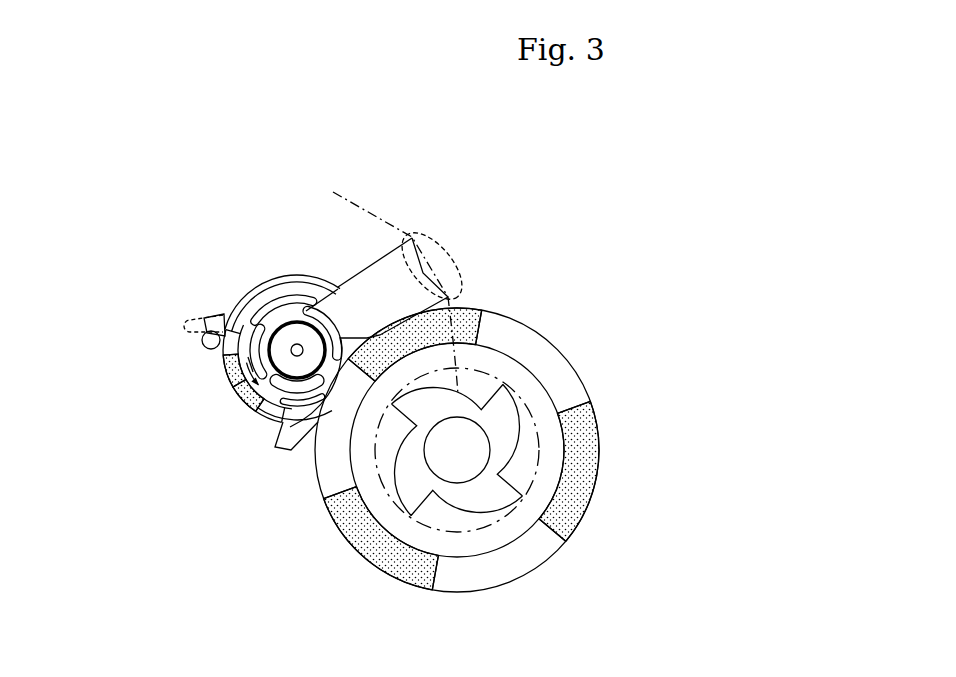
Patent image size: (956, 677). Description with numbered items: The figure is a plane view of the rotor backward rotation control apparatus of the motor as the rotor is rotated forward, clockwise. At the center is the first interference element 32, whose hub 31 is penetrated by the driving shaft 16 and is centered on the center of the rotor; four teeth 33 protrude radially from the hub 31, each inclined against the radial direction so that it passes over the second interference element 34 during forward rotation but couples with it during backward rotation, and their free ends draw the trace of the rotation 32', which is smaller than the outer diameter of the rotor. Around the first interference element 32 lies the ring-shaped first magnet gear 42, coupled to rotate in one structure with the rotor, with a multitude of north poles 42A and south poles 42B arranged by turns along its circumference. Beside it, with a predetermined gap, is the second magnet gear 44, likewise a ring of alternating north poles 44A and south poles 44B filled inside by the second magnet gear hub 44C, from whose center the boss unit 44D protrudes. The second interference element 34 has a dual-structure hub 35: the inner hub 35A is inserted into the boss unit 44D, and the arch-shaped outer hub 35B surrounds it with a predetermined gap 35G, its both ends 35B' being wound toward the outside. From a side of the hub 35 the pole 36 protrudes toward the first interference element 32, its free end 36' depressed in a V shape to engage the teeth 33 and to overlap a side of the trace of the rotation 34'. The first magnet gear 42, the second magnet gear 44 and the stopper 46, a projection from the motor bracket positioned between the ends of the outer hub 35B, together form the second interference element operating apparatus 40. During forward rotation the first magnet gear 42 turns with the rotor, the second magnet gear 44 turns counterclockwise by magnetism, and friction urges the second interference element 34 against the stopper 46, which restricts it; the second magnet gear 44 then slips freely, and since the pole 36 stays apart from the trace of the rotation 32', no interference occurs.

The driving shaft 16 is at (473, 458).
The hub 31 is at (505, 398).
The first interference element 32 is at (489, 438).
The trace of the rotation of the first interference element 32' is at (536, 450).
The tooth 33 is at (507, 415).
The second interference element 34 is at (343, 303).
The trace of the rotation of the second interference element 34' is at (437, 293).
The hub 35 is at (286, 270).
The inner hub 35A is at (262, 312).
The outer hub 35B is at (172, 299).
The both ends of the outer hub 35B' is at (161, 329).
The gap 35G is at (282, 303).
The pole 36 is at (364, 240).
The free end 36' is at (432, 229).
The second interference element operating apparatus 40 is at (260, 477).
The first magnet gear 42 is at (260, 595).
The north pole 42A is at (343, 537).
The south pole 42B is at (337, 472).
The second magnet gear 44 is at (108, 418).
The north pole 44A is at (243, 395).
The south pole 44B is at (262, 415).
The second magnet gear hub 44C is at (231, 372).
The boss unit 44D is at (223, 358).
The stopper 46 is at (248, 358).